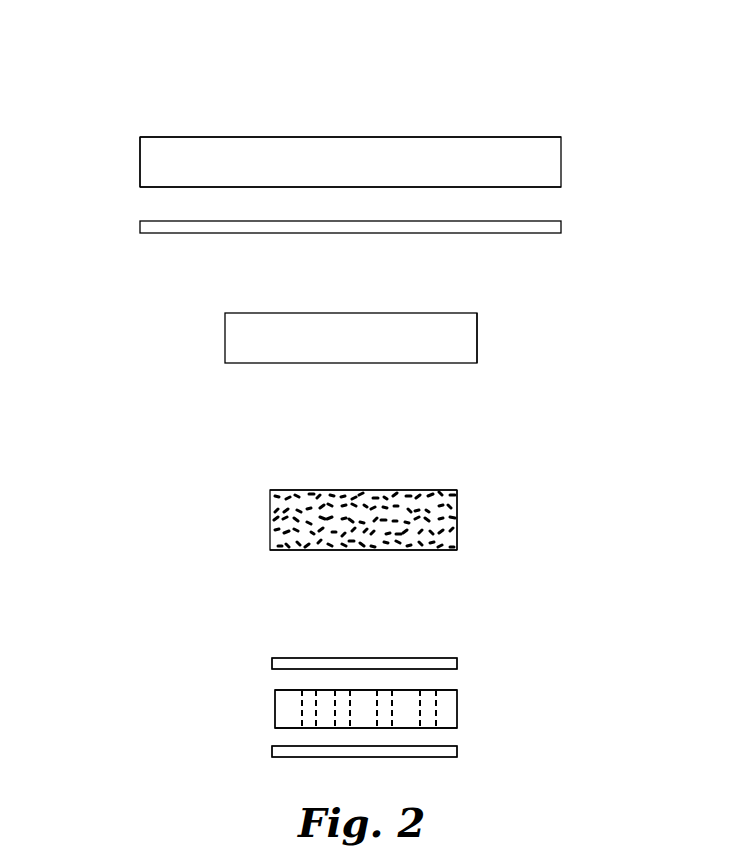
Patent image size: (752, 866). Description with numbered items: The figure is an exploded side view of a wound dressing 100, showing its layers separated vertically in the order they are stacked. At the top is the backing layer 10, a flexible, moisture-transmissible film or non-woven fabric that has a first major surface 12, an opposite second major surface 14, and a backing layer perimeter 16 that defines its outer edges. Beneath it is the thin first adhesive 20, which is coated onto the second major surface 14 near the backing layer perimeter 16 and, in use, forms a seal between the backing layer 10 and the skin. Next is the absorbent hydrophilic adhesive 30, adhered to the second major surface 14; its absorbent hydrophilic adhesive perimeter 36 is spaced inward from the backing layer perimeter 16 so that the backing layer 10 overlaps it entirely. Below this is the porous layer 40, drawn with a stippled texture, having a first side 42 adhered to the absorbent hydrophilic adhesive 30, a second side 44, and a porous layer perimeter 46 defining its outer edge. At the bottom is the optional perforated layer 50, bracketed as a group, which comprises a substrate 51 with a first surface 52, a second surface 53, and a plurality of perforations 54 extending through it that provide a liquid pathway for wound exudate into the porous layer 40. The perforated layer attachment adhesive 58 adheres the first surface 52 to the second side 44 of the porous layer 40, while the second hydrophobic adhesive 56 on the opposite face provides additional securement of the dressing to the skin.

The wound dressing 100 is at (238, 52).
The backing layer 10 is at (512, 137).
The first major surface 12 is at (188, 128).
The second major surface 14 is at (530, 189).
The backing layer perimeter 16 is at (140, 158).
The first adhesive 20 is at (184, 235).
The absorbent hydrophilic adhesive 30 is at (225, 337).
The absorbent hydrophilic adhesive perimeter 36 is at (477, 347).
The porous layer 40 is at (280, 518).
The first side 42 is at (418, 489).
The second side 44 is at (290, 552).
The porous layer perimeter 46 is at (457, 512).
The perforated layer 50 is at (585, 688).
The substrate 51 is at (275, 720).
The first surface 52 is at (440, 691).
The second surface 53 is at (452, 729).
The perforations 54 is at (437, 711).
The second hydrophobic adhesive 56 is at (272, 755).
The perforated layer attachment adhesive 58 is at (272, 660).